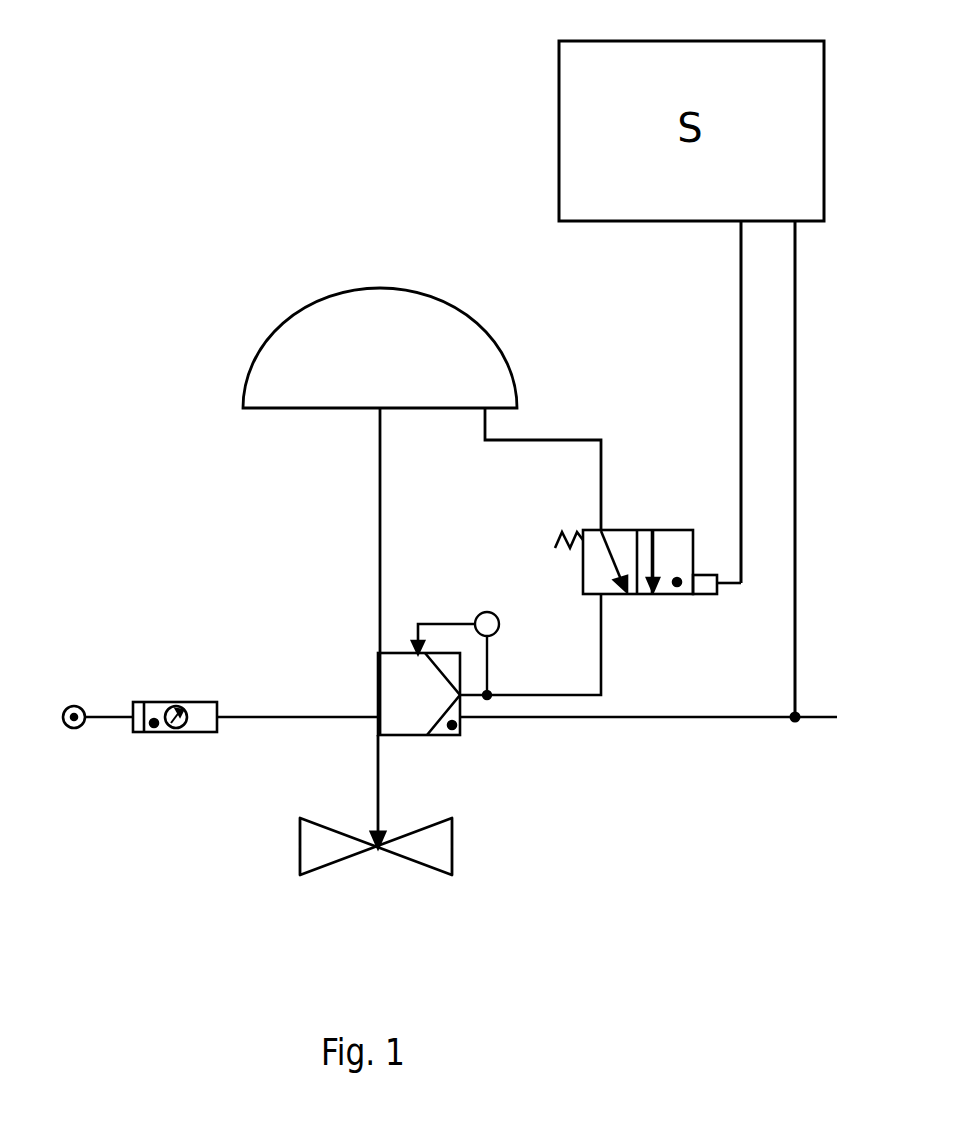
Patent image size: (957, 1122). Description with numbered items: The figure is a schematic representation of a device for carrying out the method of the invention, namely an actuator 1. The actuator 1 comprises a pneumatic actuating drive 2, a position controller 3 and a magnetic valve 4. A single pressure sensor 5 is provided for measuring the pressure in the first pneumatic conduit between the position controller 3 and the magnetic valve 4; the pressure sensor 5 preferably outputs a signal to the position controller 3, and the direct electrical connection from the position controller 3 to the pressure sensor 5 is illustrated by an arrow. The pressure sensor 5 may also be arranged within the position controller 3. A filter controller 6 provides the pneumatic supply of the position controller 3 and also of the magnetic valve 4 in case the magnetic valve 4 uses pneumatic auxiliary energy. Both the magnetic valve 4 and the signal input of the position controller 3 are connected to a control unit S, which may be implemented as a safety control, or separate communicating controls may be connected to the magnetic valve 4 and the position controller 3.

The actuator 1 is at (293, 893).
The pneumatic actuating drive 2 is at (249, 328).
The position controller 3 is at (452, 725).
The magnetic valve 4 is at (677, 582).
The pressure sensor 5 is at (500, 630).
The filter controller 6 is at (154, 723).